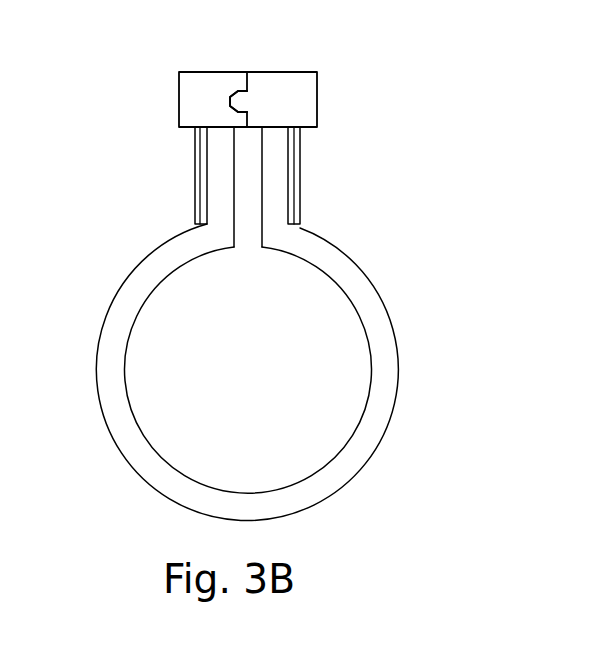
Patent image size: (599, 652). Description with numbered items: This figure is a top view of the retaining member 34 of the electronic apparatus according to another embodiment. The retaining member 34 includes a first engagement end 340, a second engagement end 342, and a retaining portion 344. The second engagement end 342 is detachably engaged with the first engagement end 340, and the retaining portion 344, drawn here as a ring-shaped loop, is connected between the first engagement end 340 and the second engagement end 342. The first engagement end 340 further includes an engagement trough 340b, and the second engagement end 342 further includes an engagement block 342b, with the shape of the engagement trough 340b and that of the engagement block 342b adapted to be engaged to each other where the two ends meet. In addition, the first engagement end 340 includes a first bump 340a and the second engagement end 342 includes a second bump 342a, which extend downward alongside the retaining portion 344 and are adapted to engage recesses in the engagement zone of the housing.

The retaining member 34 is at (487, 28).
The first engagement end 340 is at (215, 72).
The first bump 340a is at (195, 167).
The engagement trough 340b is at (230, 104).
The second engagement end 342 is at (317, 98).
The second bump 342a is at (300, 173).
The engagement block 342b is at (242, 102).
The retaining portion 344 is at (342, 267).